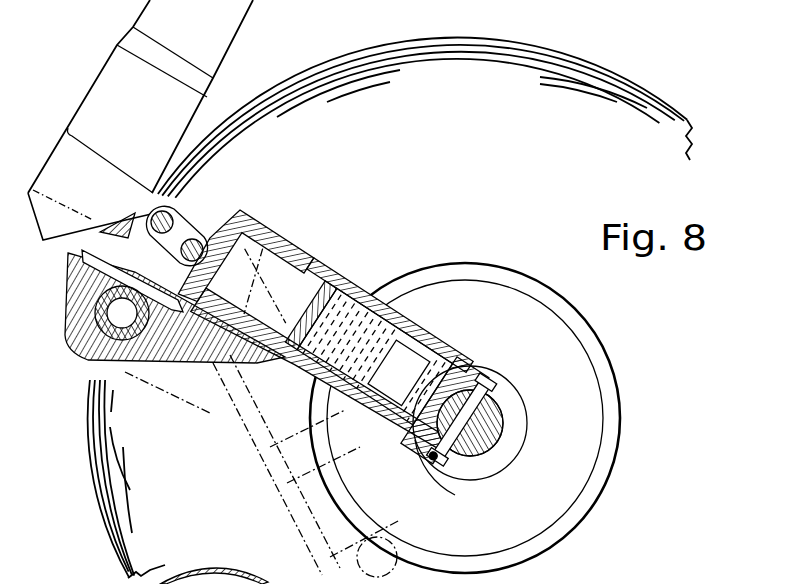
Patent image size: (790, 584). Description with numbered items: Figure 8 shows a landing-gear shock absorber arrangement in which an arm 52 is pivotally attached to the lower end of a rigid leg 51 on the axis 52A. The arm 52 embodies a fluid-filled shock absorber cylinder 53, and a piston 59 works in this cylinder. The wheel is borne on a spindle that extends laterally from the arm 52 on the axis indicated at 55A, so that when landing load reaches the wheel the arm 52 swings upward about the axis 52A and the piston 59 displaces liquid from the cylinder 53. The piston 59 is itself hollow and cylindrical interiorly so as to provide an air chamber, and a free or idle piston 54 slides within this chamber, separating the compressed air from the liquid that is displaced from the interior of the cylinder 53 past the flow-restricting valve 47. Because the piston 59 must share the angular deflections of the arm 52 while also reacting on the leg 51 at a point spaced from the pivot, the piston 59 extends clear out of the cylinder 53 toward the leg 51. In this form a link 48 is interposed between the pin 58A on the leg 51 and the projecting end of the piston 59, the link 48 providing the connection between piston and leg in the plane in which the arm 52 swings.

The rigid leg 51 is at (140, 120).
The pin on the leg 58A is at (165, 220).
The link 48 is at (230, 204).
The free or idle piston 54 is at (312, 268).
The piston 59 is at (442, 306).
The flow-restricting valve 47 is at (420, 352).
The axis of the wheel spindle 55A is at (465, 421).
The fluid-filled shock absorber cylinder 53 is at (420, 492).
The arm 52 is at (250, 364).
The pivot axis of the arm 52A is at (122, 313).